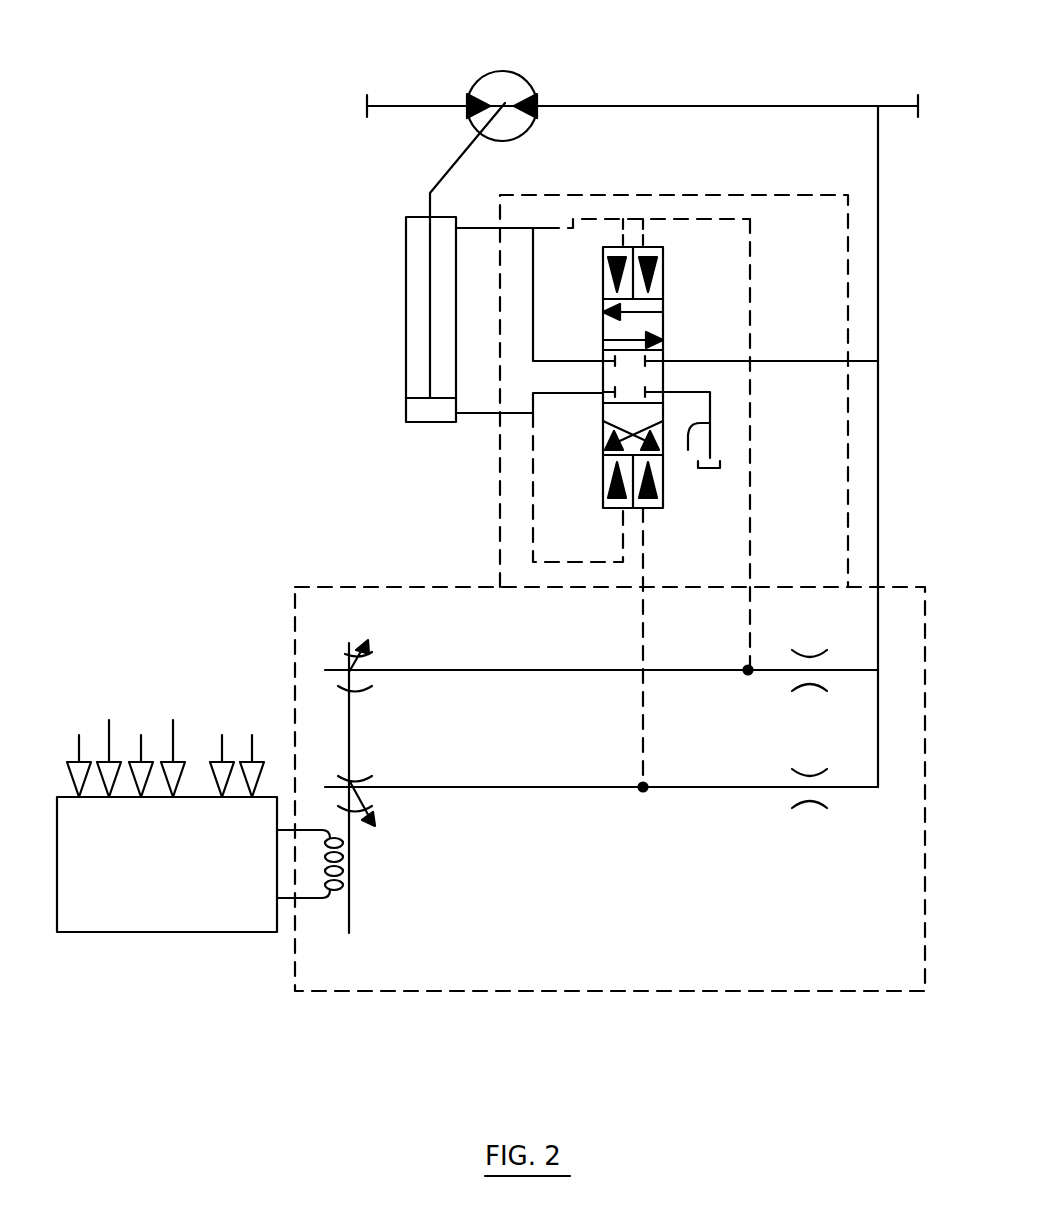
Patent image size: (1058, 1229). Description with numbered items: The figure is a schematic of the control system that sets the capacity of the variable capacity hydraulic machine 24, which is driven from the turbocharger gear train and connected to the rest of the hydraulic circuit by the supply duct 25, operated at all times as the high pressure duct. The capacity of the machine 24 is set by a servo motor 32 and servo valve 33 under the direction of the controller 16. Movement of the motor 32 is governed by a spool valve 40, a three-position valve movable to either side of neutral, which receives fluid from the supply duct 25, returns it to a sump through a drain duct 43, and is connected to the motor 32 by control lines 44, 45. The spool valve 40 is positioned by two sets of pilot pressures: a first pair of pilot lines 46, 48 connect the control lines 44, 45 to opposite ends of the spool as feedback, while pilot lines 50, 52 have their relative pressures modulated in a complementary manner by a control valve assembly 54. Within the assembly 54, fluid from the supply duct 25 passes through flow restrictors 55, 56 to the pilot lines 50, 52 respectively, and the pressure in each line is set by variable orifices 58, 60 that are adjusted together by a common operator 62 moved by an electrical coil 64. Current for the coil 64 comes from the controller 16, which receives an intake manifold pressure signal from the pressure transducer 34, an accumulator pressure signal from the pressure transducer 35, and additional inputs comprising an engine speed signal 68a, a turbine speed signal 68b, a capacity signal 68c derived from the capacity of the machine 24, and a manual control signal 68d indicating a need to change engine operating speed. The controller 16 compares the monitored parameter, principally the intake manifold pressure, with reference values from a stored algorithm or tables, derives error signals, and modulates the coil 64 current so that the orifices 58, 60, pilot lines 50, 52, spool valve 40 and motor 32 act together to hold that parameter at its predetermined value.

The controller 16 is at (135, 932).
The variable capacity hydraulic machine 24 is at (515, 85).
The supply duct 25 is at (697, 105).
The servo motor 32 is at (406, 350).
The servo valve 33 is at (848, 419).
The pressure transducer 34 is at (252, 735).
The pressure transducer 35 is at (222, 735).
The spool valve 40 is at (663, 312).
The drain duct 43 is at (691, 435).
The control line 44 is at (482, 413).
The control line 45 is at (470, 228).
The pilot line 46 is at (598, 219).
The pilot line 48 is at (533, 497).
The pilot line 50 is at (750, 545).
The pilot line 52 is at (648, 712).
The control valve assembly 54 is at (563, 996).
The flow restrictor 55 is at (812, 655).
The flow restrictor 56 is at (820, 806).
The variable orifice 58 is at (349, 658).
The variable orifice 60 is at (378, 808).
The common operator 62 is at (349, 920).
The electrical coil 64 is at (342, 873).
The engine speed signal 68a is at (79, 735).
The turbine speed signal 68b is at (109, 720).
The capacity signal 68c is at (141, 735).
The manual control signal 68d is at (173, 720).